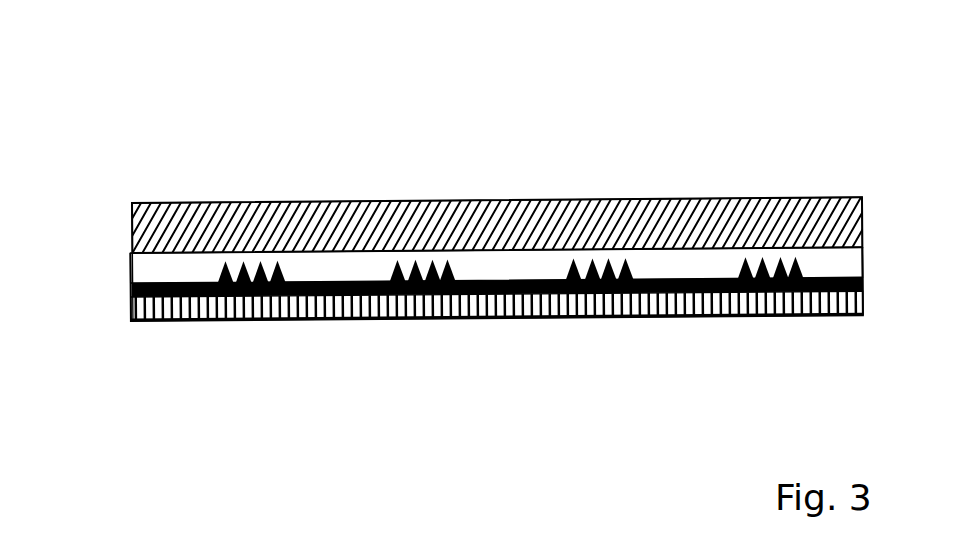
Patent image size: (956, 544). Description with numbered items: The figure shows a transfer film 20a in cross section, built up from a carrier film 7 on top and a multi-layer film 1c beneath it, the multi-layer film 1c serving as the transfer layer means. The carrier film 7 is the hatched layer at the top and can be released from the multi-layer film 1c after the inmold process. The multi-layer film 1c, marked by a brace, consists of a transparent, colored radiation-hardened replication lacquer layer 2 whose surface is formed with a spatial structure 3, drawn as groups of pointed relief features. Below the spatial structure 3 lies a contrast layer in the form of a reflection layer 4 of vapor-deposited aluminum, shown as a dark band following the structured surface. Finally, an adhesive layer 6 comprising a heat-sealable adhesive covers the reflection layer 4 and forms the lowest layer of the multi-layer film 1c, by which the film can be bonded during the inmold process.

The transfer film 20a is at (307, 182).
The carrier film 7 is at (660, 218).
The multi-layer film 1c is at (128, 253).
The replication lacquer layer 2 is at (672, 265).
The spatial structure 3 is at (448, 270).
The reflection layer 4 is at (501, 290).
The adhesive layer 6 is at (315, 310).